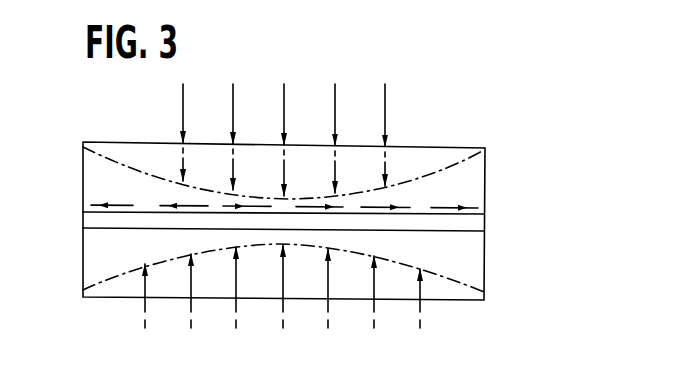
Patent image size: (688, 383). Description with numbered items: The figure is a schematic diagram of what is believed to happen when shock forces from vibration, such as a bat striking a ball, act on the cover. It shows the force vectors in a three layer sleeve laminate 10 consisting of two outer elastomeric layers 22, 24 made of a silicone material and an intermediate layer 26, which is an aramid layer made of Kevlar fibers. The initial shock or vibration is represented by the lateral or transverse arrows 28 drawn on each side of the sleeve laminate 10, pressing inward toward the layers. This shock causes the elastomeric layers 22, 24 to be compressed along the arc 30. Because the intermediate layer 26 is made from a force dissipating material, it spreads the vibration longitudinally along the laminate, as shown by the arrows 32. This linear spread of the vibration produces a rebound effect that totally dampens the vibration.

The sleeve laminate 10 is at (474, 115).
The elastomeric layer 22 is at (457, 258).
The elastomeric layer 24 is at (458, 164).
The intermediate layer 26 is at (447, 228).
The lateral or transverse arrows 28 is at (385, 100).
The arc 30 is at (417, 178).
The arrows 32 is at (433, 208).